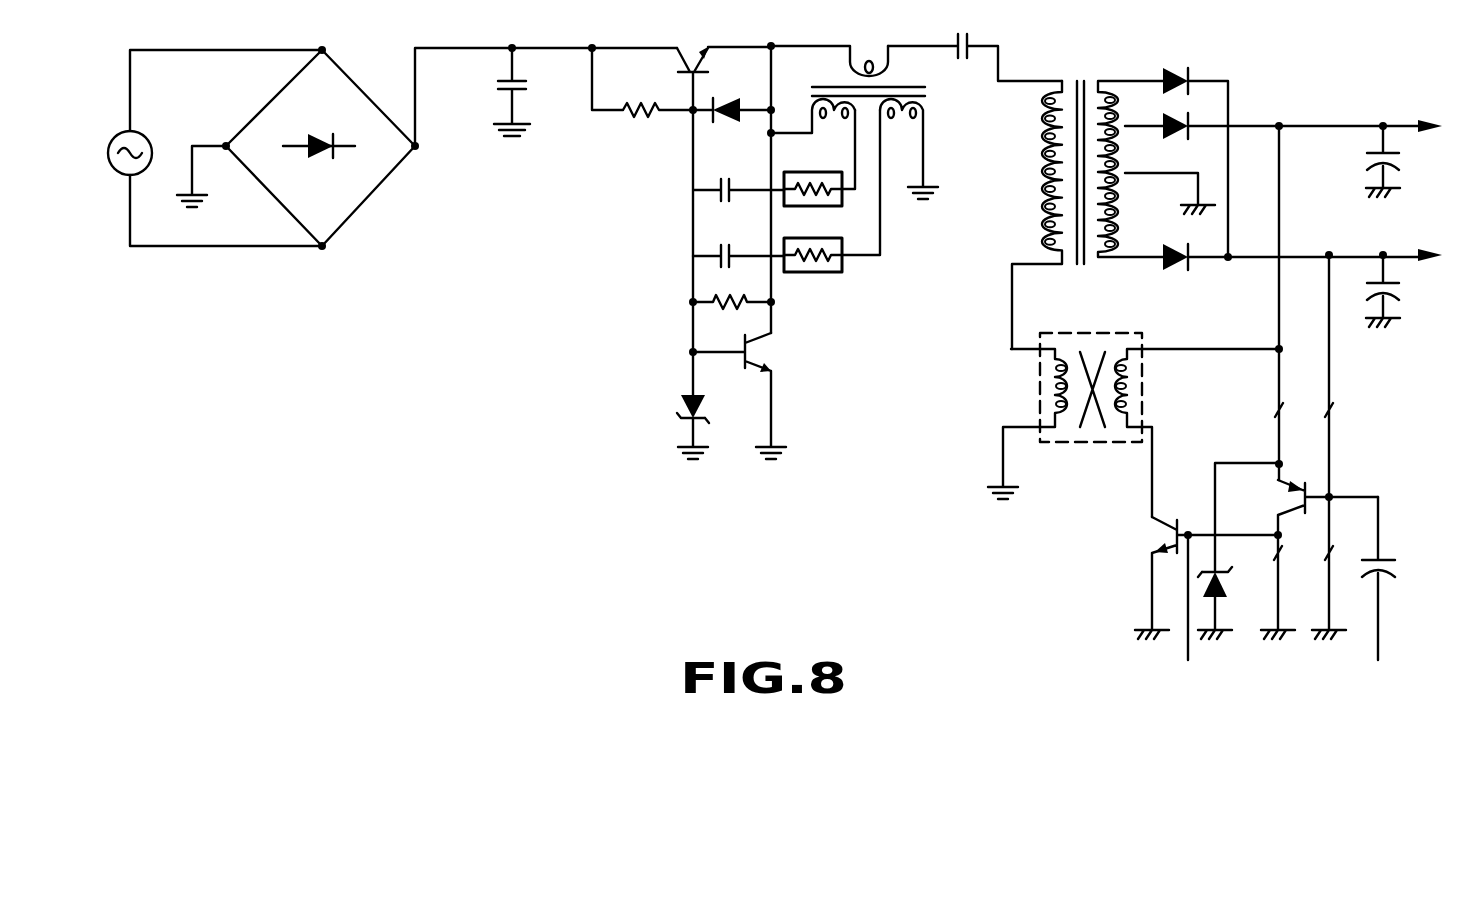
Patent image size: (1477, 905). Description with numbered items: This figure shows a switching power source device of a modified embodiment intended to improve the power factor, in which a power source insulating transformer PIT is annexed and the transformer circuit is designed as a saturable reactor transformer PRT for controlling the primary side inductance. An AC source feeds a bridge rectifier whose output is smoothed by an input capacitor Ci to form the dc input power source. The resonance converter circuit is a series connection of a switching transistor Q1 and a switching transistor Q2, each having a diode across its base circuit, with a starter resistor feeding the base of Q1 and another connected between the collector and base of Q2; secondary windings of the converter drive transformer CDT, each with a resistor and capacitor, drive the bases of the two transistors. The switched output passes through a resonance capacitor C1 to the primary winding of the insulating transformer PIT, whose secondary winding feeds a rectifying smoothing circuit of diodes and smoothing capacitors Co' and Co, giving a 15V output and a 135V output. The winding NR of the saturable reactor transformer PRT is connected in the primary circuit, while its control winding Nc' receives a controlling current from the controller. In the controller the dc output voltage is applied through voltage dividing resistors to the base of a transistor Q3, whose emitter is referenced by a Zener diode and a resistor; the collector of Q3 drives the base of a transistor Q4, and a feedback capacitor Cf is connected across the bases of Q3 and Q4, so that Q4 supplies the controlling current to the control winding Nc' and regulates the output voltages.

The AC power source AC is at (301, 148).
The input smoothing capacitor Ci is at (524, 90).
The switching transistor Q1 is at (724, 64).
The switching transistor Q2 is at (747, 396).
The converter drive transformer CDT is at (854, 107).
The resonance capacitor C1 is at (975, 47).
The power isolation transformer PIT is at (1216, 199).
The 15V output terminal 15V is at (1429, 112).
The smoothing capacitor Co' is at (1357, 159).
The 135V output terminal 135V is at (1426, 242).
The smoothing capacitor Co is at (1379, 289).
The power regulating transformer PRT is at (1091, 404).
The winding NR is at (1026, 424).
The control winding Nc' is at (1197, 433).
The transistor Q3 is at (1311, 559).
The transistor Q4 is at (1200, 588).
The feedback capacitor Cf is at (1394, 578).